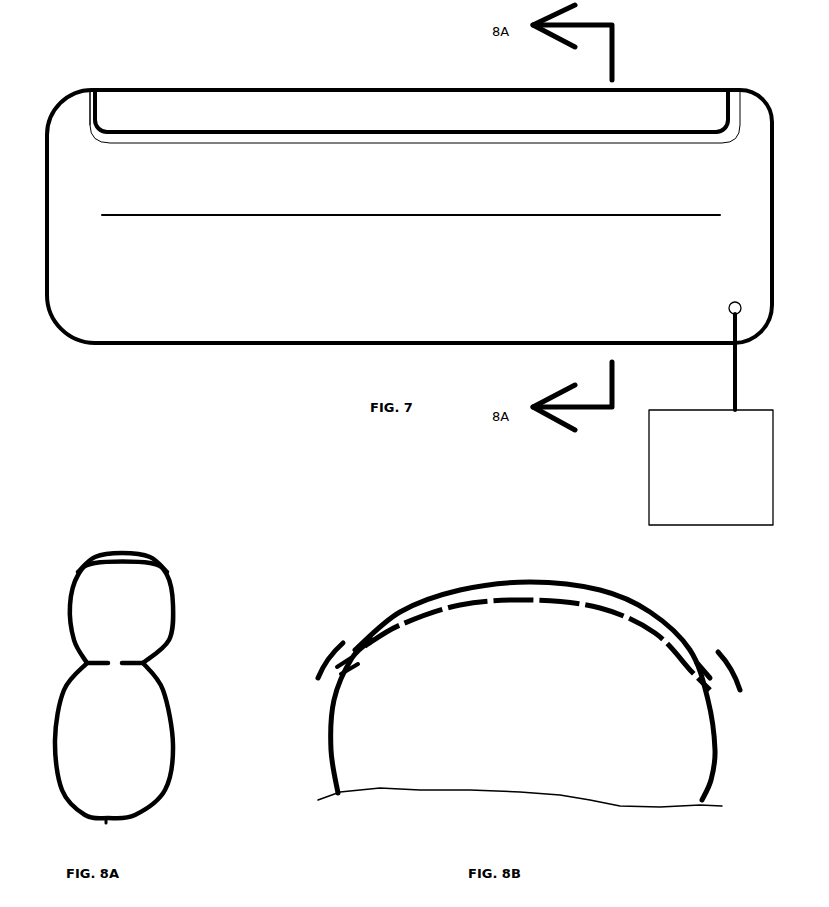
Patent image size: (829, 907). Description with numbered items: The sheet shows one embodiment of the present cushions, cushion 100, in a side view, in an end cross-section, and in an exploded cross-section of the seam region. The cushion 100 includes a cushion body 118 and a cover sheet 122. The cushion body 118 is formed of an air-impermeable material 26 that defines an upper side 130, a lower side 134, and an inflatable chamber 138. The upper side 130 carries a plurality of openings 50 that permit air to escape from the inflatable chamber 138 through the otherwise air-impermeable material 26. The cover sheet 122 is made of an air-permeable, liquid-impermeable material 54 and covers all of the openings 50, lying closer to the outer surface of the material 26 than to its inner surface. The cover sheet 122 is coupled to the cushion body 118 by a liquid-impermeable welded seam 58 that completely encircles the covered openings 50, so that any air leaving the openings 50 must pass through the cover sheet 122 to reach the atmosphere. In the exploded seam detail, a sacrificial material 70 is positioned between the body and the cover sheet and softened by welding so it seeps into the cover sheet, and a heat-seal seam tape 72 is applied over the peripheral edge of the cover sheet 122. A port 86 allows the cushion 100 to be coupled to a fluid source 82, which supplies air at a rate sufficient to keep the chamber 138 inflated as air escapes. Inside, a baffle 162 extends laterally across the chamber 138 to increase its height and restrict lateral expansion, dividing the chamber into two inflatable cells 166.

In FIG. 7, the cushion 100 is at (341, 68).
In FIG. 8A, the cushion 100 is at (86, 512).
In FIG. 7, the cushion body 118 is at (752, 130).
In FIG. 8A, the cushion body 118 is at (153, 648).
In FIG. 8B, the cushion body 118 is at (708, 786).
In FIG. 7, the cover sheet 122 is at (178, 108).
In FIG. 8A, the cover sheet 122 is at (132, 556).
In FIG. 8B, the cover sheet 122 is at (622, 597).
In FIG. 7, the upper side 130 is at (745, 88).
In FIG. 7, the welded seam 58 is at (92, 86).
In FIG. 8A, the welded seam 58 is at (78, 562).
In FIG. 8B, the welded seam 58 is at (330, 648).
In FIG. 7, the lower side 134 is at (147, 346).
In FIG. 7, the port 86 is at (730, 314).
In FIG. 7, the fluid source 82 is at (711, 467).
In FIG. 8A, the inflatable chamber 138 is at (155, 612).
In FIG. 8A, the baffle 162 is at (130, 667).
In FIG. 8A, the inflatable cells 166 is at (88, 613).
In FIG. 8B, the air-permeable, liquid-impermeable material 54 is at (663, 622).
In FIG. 8B, the openings 50 is at (452, 622).
In FIG. 8B, the seam tape 72 is at (745, 678).
In FIG. 8B, the sacrificial material 70 is at (712, 683).
In FIG. 8B, the air-impermeable material 26 is at (714, 755).